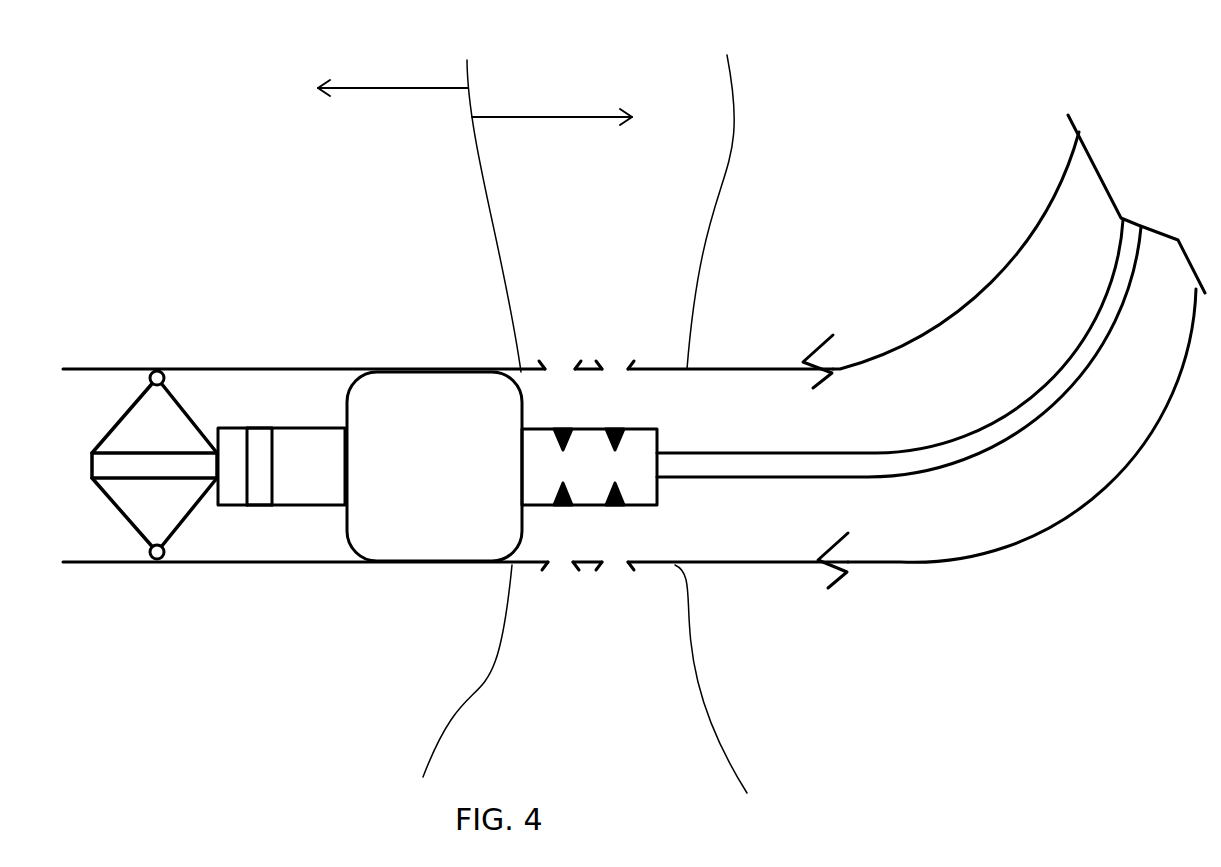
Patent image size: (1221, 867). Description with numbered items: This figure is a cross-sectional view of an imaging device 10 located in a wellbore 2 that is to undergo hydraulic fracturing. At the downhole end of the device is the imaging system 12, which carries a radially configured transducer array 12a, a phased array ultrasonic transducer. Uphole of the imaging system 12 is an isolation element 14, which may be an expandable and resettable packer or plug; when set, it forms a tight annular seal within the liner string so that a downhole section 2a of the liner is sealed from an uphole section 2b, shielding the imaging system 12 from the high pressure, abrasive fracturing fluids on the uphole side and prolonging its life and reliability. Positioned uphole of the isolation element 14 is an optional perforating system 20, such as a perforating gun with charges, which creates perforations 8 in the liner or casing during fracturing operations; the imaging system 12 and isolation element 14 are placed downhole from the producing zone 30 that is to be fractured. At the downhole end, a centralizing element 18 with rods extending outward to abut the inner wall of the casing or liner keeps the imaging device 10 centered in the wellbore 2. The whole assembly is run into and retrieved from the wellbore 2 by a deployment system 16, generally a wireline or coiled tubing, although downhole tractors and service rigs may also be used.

The wellbore 2 is at (110, 369).
The downhole section of the liner string 2a is at (380, 88).
The uphole section of the liner string 2b is at (513, 117).
The perforations 8 is at (560, 370).
The imaging device 10 is at (400, 276).
The imaging system 12 is at (293, 505).
The radially configured transducer array 12a is at (260, 428).
The isolation element 14 is at (398, 562).
The deployment system 16 is at (735, 453).
The centralizing element 18 is at (187, 402).
The perforating system 20 is at (657, 505).
The producing zone 30 is at (610, 207).